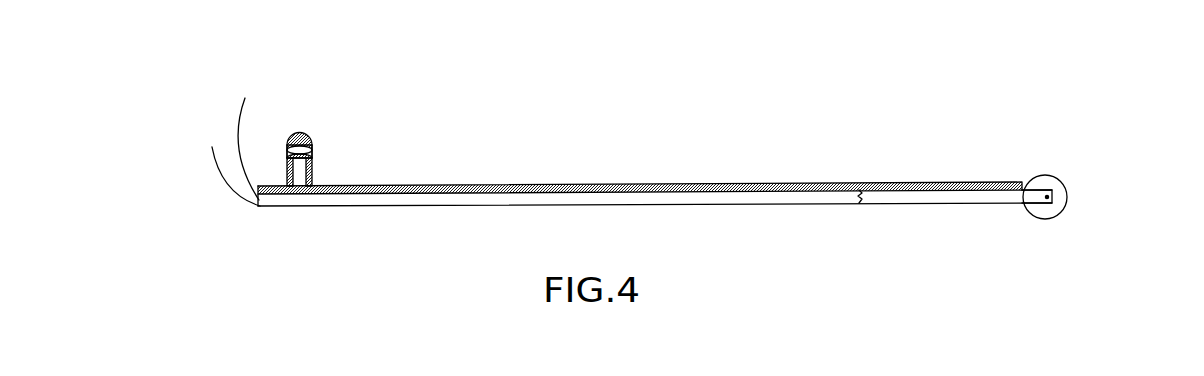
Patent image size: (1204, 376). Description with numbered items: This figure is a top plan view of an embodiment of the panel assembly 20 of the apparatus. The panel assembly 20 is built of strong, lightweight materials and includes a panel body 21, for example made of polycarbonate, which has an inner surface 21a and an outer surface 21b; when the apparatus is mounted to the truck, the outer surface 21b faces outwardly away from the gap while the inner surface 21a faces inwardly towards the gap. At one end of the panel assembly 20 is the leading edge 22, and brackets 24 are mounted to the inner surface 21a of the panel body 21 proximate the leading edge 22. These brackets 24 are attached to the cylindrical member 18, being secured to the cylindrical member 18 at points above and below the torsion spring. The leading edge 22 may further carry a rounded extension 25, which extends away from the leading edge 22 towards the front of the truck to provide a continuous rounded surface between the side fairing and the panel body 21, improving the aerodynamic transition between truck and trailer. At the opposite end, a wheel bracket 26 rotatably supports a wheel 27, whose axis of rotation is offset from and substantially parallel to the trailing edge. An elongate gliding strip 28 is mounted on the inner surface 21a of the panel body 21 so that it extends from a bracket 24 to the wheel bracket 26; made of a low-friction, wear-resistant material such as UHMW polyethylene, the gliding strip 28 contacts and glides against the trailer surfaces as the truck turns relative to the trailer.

The cylindrical member 18 is at (313, 138).
The panel assembly 20 is at (524, 112).
The panel body 21 is at (507, 195).
The inner surface 21a is at (757, 164).
The outer surface 21b is at (732, 224).
The leading edge 22 is at (262, 132).
The bracket 24 is at (313, 160).
The rounded extension 25 is at (218, 176).
The wheel bracket 26 is at (1022, 204).
The wheel 27 is at (1065, 188).
The gliding strip 28 is at (560, 182).